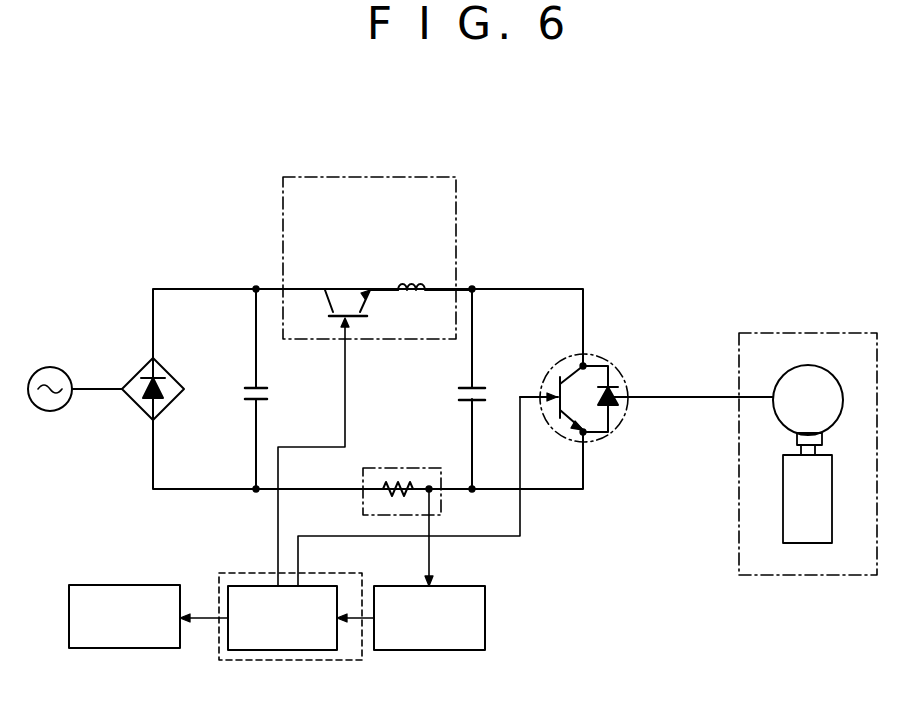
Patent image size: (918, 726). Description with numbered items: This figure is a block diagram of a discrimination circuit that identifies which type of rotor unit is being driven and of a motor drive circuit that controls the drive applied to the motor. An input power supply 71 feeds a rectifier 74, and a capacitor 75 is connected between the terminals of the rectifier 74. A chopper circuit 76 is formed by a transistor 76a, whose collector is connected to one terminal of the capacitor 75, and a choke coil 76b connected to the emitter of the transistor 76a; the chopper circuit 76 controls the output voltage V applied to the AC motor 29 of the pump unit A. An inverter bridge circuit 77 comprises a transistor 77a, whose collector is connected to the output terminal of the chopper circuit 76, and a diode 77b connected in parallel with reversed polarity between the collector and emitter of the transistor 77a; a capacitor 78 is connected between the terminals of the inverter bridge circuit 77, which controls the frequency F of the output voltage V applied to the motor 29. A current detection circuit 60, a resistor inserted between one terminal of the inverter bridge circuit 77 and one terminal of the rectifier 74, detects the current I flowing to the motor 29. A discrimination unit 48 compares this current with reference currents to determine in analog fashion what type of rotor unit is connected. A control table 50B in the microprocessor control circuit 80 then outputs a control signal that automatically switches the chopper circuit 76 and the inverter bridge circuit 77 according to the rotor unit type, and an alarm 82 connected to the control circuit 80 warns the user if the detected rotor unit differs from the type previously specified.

The input power supply 71 is at (42, 363).
The rectifier 74 is at (135, 377).
The capacitor 75 is at (245, 395).
The chopper circuit 76 is at (345, 174).
The transistor 76a is at (348, 297).
The choke coil 76b is at (417, 282).
The capacitor 78 is at (458, 392).
The inverter bridge circuit 77 is at (604, 358).
The transistor 77a is at (550, 390).
The diode 77b is at (627, 412).
The motor 29 is at (808, 366).
The pump unit A is at (778, 577).
The current detection circuit 60 is at (396, 468).
The discrimination unit 48 is at (430, 650).
The control table 50B is at (283, 650).
The control circuit 80 is at (242, 662).
The alarm 82 is at (107, 650).